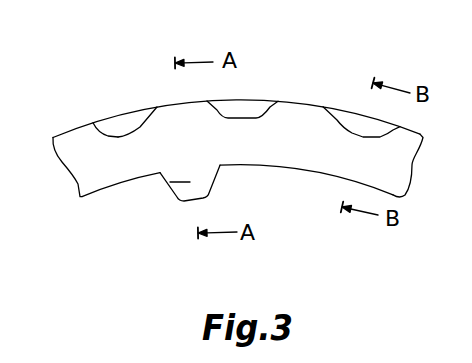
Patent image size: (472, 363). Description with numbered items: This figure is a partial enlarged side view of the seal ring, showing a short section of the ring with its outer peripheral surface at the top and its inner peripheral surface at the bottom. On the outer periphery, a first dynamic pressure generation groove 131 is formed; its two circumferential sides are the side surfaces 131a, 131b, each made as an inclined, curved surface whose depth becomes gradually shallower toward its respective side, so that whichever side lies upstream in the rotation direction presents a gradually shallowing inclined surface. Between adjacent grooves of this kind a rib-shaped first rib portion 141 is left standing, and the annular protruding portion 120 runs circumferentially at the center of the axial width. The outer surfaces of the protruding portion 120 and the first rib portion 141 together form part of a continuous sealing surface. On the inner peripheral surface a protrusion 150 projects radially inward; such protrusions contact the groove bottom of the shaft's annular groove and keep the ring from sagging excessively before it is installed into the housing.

The annular protruding portion 120 is at (248, 100).
The first dynamic pressure generation groove 131 is at (101, 81).
The side surface 131a is at (98, 122).
The side surface 131b is at (148, 117).
The first rib portion 141 is at (307, 102).
The protrusion 150 is at (168, 183).